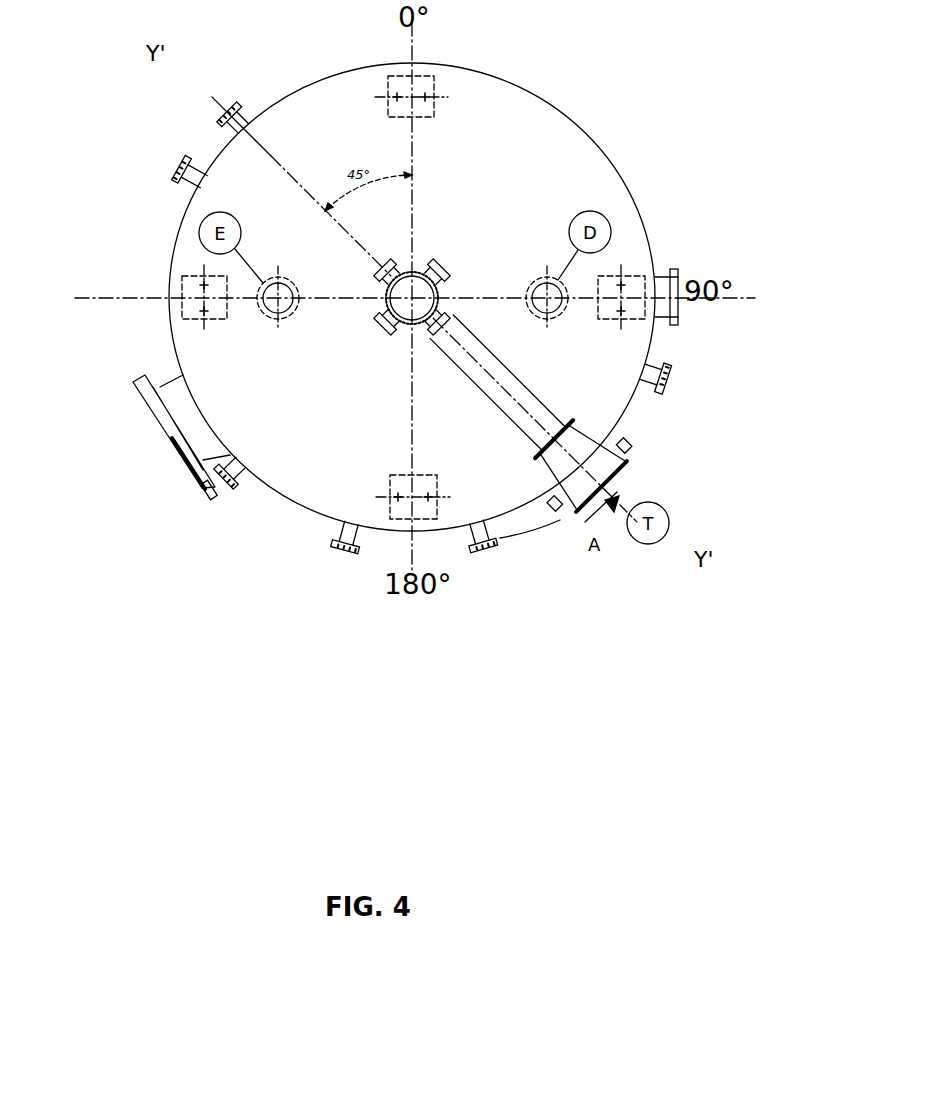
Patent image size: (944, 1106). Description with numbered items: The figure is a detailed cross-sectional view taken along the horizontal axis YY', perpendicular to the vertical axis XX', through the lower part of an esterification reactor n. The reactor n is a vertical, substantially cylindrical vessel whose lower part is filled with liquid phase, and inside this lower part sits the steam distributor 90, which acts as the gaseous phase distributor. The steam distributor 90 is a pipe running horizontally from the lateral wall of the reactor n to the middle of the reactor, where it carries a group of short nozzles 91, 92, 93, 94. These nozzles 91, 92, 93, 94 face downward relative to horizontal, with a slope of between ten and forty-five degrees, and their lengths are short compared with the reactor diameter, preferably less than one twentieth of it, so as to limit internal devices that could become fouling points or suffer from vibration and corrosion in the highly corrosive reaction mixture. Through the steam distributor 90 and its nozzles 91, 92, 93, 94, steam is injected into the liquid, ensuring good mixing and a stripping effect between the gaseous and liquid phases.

The steam distributor 90 is at (545, 404).
The nozzle 91 is at (438, 267).
The nozzle 92 is at (382, 277).
The nozzle 93 is at (384, 322).
The nozzle 94 is at (438, 335).
The esterification reactor n is at (532, 545).